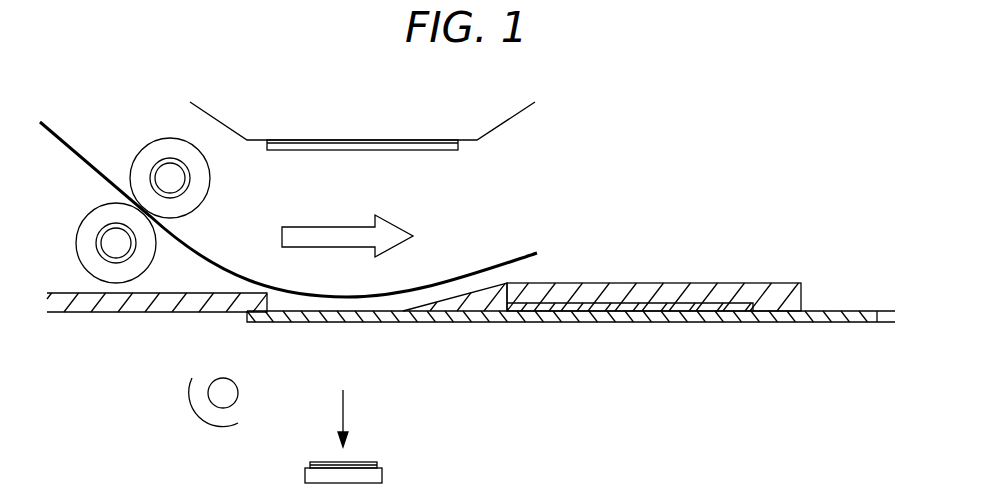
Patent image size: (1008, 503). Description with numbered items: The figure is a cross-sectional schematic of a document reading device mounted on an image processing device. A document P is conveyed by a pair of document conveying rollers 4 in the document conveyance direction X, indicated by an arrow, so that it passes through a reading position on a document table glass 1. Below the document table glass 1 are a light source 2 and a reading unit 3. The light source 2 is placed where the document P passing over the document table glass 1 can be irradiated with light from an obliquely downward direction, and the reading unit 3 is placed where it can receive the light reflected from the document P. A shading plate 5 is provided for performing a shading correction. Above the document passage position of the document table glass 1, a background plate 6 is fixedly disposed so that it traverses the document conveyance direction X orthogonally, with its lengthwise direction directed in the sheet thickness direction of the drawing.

The document table glass 1 is at (437, 317).
The light source 2 is at (220, 380).
The reading unit 3 is at (382, 475).
The pair of document conveying rollers 4 is at (93, 210).
The shading plate 5 is at (642, 308).
The background plate 6 is at (425, 150).
The document P is at (463, 280).
The document conveyance direction X is at (325, 233).